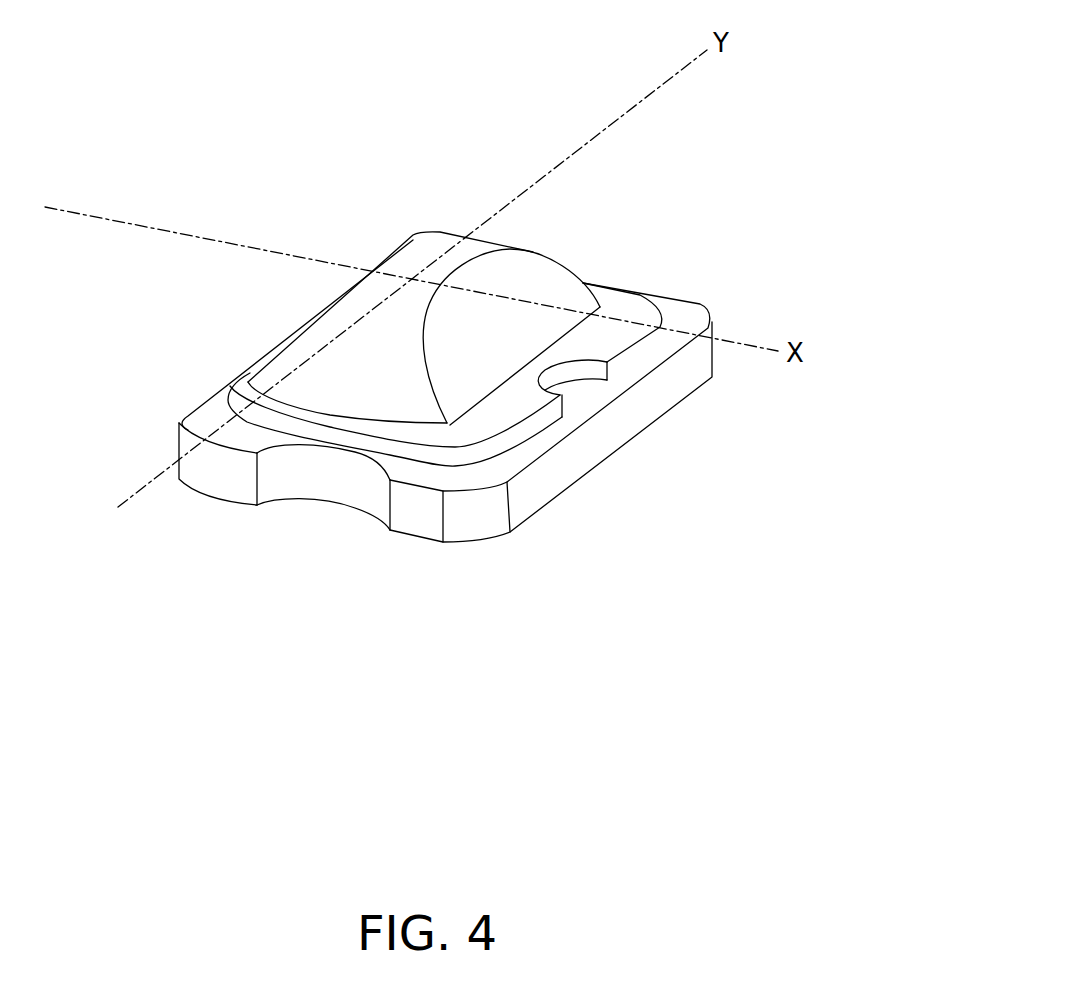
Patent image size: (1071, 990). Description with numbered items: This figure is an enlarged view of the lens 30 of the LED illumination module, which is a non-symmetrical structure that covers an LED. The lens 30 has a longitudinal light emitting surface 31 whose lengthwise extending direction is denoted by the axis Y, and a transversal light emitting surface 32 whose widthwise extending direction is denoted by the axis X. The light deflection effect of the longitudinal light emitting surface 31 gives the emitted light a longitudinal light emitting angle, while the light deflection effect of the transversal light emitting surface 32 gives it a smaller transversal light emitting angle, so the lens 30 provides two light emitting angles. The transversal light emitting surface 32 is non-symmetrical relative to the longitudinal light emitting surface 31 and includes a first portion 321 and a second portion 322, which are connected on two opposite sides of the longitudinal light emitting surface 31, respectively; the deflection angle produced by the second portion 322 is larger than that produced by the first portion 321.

The lens 30 is at (333, 230).
The longitudinal light emitting surface 31 is at (411, 238).
The transversal light emitting surface 32 is at (470, 368).
The first portion 321 is at (538, 275).
The second portion 322 is at (333, 297).